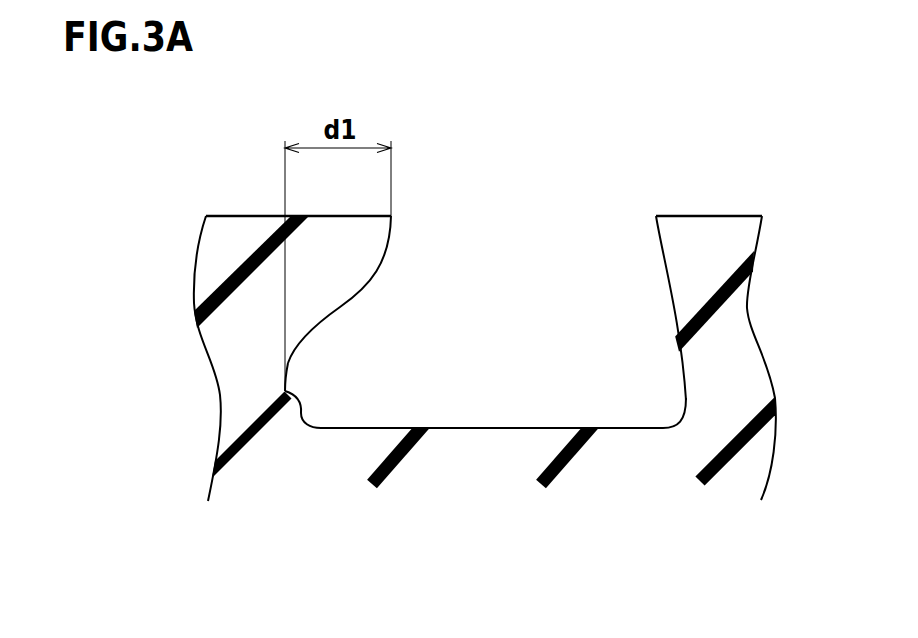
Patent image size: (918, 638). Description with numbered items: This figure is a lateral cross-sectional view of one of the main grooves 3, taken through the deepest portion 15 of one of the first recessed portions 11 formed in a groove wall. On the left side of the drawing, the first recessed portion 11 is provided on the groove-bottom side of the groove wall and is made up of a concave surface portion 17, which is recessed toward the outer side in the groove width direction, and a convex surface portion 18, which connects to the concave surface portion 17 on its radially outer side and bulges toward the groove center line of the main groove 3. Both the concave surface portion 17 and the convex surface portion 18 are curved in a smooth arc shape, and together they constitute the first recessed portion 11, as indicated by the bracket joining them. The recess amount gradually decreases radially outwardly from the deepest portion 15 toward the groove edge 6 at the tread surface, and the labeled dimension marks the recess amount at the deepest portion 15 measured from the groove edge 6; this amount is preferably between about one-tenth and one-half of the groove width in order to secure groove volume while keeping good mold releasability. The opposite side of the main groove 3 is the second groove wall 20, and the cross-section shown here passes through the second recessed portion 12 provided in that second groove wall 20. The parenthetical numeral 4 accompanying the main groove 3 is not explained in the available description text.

The main groove 3 is at (500, 288).
The groove (tread rubber) 4 is at (483, 458).
The groove edge 6 is at (394, 213).
The first recessed portion 11 is at (390, 421).
The second recessed portion 12 is at (671, 308).
The deepest portion 15 is at (302, 417).
The concave surface portion 17 is at (309, 390).
The convex surface portion 18 is at (393, 292).
The second groove wall 20 is at (661, 395).